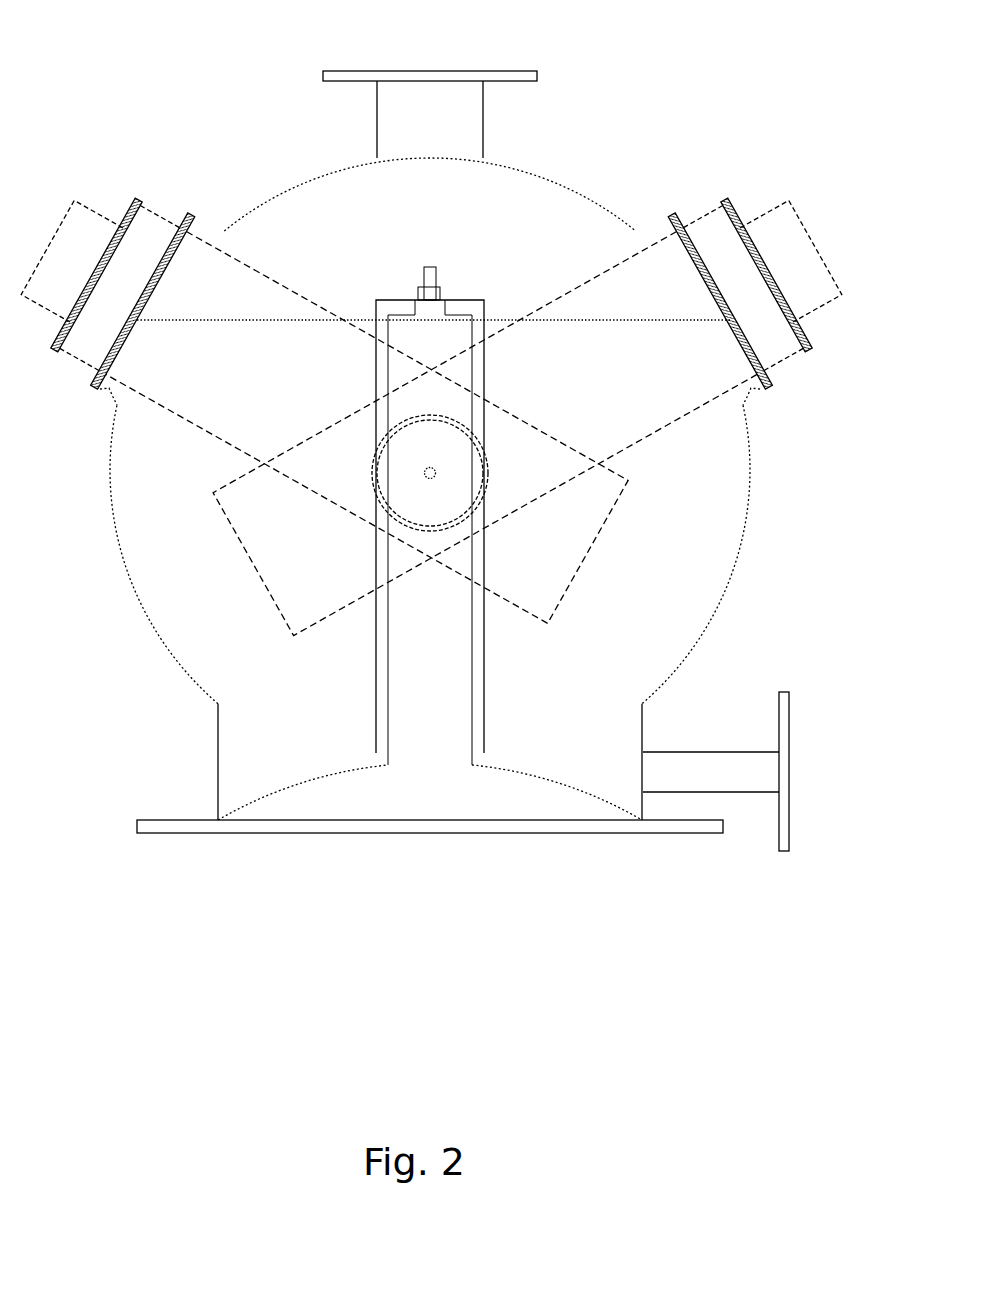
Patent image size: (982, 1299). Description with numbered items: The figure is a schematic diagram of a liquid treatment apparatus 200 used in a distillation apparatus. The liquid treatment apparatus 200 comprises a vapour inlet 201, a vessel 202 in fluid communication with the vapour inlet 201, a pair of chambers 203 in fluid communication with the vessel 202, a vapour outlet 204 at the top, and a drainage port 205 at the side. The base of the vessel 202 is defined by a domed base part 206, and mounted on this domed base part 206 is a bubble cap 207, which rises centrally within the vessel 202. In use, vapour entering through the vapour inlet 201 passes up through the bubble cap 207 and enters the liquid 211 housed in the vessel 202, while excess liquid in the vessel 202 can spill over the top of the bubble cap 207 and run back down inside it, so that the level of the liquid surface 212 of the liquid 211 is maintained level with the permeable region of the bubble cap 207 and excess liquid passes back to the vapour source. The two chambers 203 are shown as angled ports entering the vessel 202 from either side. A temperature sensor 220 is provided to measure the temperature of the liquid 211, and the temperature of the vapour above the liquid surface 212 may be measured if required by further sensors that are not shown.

The liquid treatment apparatus 200 is at (678, 98).
The vapour inlet 201 is at (422, 826).
The vessel 202 is at (193, 692).
The pair of chambers 203 is at (602, 562).
The vapour outlet 204 is at (428, 68).
The drainage port 205 is at (792, 765).
The domed base part 206 is at (540, 758).
The bubble cap 207 is at (393, 300).
The liquid 211 is at (299, 683).
The liquid surface 212 is at (297, 320).
The temperature sensor 220 is at (422, 473).